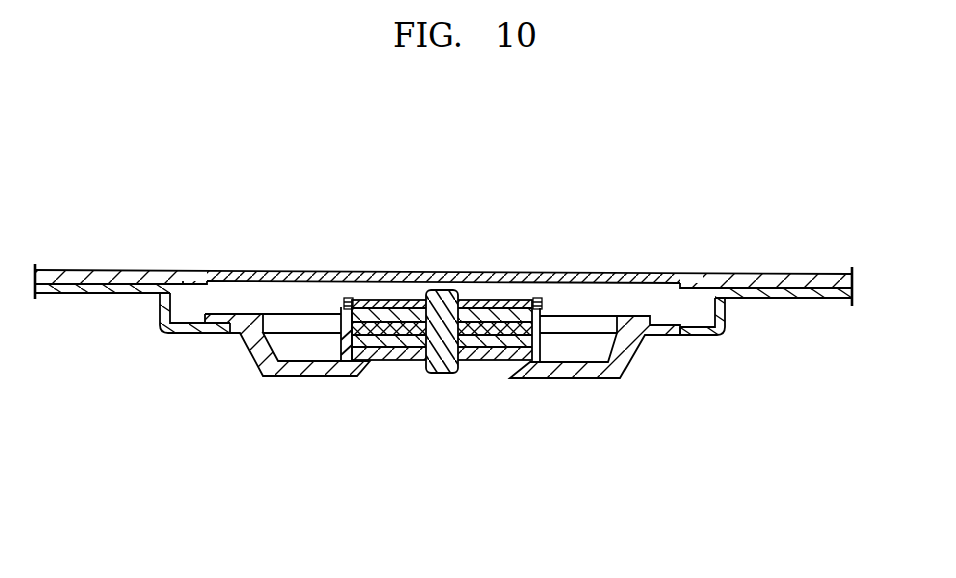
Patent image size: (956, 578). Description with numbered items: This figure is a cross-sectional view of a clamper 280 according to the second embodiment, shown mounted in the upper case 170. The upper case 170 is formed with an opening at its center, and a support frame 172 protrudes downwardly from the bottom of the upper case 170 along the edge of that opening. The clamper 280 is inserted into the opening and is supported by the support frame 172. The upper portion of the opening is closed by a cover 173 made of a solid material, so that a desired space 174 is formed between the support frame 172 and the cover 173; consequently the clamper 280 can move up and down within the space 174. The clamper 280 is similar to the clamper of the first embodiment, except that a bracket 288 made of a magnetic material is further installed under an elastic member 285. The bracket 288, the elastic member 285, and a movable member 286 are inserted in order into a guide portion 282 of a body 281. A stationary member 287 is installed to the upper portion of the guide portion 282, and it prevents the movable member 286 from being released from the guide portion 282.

The upper case 170 is at (757, 282).
The support frame 172 is at (700, 338).
The cover 173 is at (606, 282).
The space 174 is at (266, 298).
The clamper 280 is at (482, 372).
The body 281 is at (313, 368).
The guide portion 282 is at (348, 350).
The elastic member 285 is at (373, 298).
The movable member 286 is at (412, 298).
The stationary member 287 is at (478, 298).
The bracket 288 is at (512, 298).